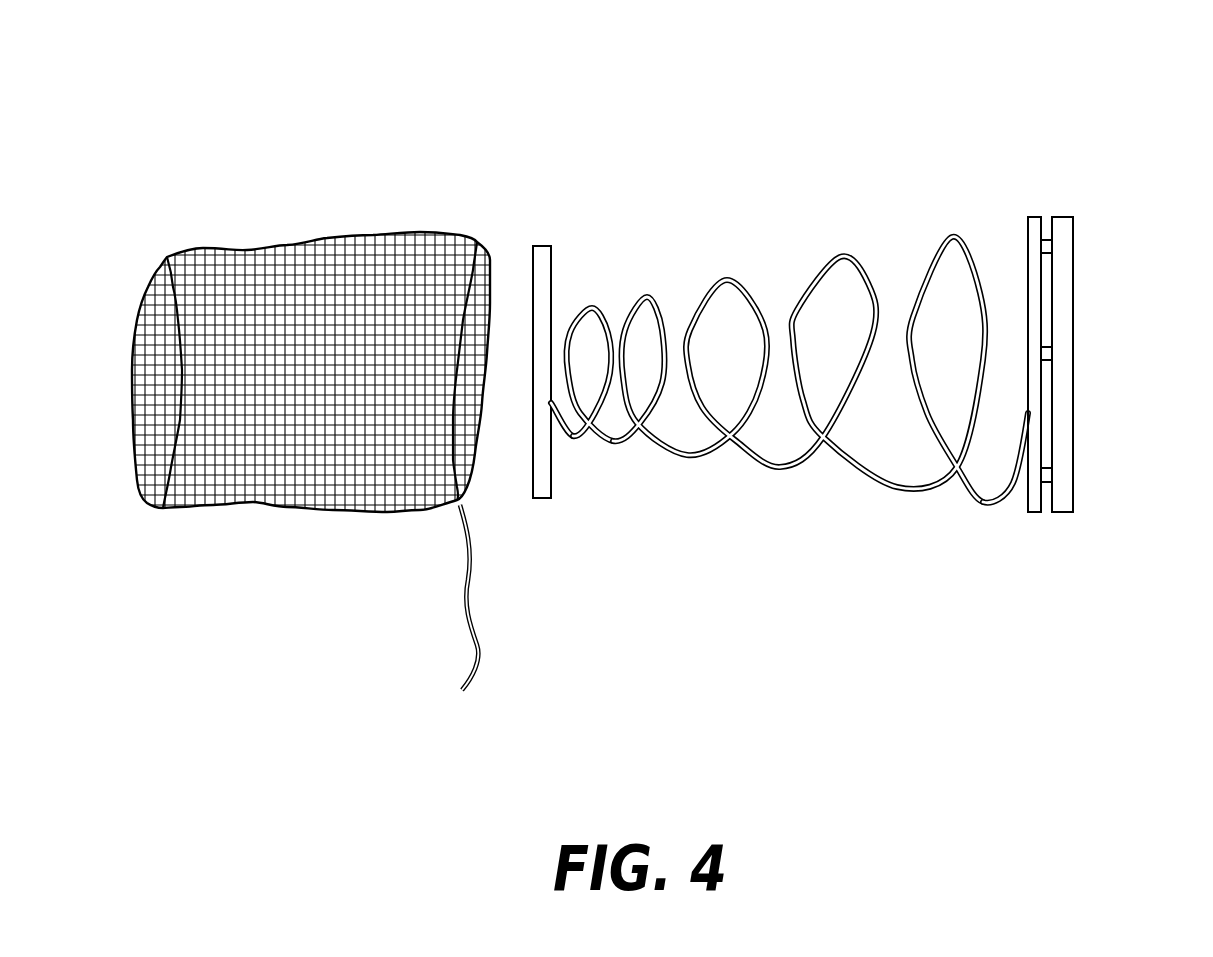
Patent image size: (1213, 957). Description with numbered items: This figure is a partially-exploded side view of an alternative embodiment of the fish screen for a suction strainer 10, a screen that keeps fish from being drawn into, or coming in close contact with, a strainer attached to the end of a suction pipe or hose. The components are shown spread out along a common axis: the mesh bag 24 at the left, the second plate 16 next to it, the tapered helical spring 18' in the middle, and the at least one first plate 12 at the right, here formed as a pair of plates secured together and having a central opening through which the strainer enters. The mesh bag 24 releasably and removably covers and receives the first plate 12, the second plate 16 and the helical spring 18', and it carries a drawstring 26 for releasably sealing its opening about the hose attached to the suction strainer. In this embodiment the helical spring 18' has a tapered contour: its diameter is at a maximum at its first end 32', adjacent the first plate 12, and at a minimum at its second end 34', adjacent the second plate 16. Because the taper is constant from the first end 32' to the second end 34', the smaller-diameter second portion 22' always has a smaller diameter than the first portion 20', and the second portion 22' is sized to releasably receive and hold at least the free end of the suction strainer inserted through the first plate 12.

The fish screen for a suction strainer 10 is at (483, 144).
The first plate 12 is at (1073, 483).
The second plate 16 is at (542, 247).
The helical spring 18' is at (799, 334).
The first portion 20' is at (984, 513).
The second portion 22' is at (622, 311).
The mesh bag 24 is at (289, 247).
The drawstring 26 is at (480, 643).
The first end 32' is at (1012, 328).
The second end 34' is at (595, 307).